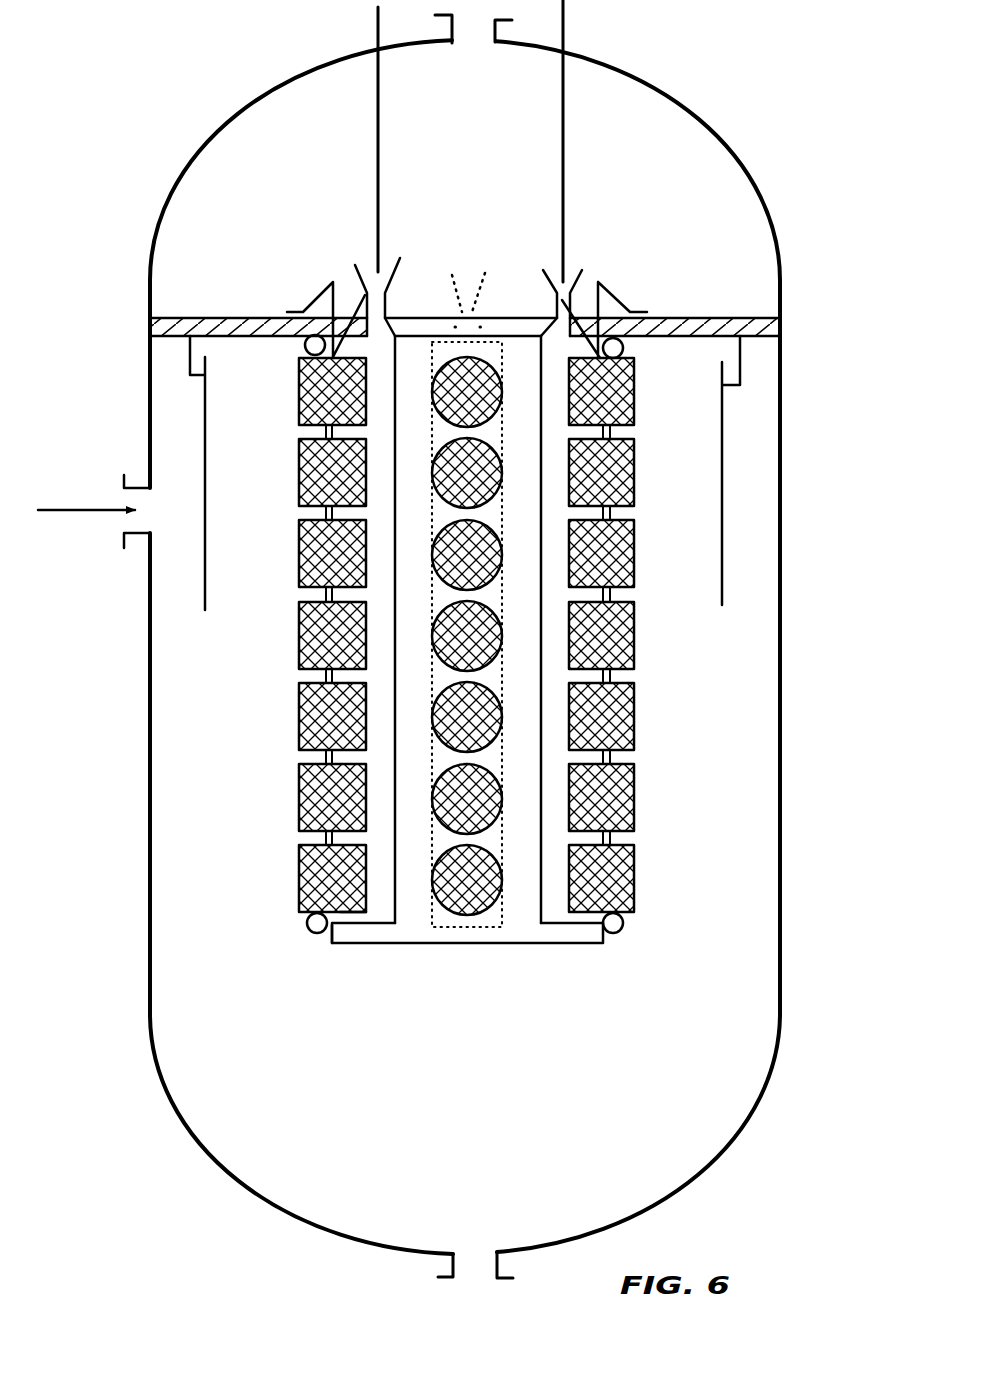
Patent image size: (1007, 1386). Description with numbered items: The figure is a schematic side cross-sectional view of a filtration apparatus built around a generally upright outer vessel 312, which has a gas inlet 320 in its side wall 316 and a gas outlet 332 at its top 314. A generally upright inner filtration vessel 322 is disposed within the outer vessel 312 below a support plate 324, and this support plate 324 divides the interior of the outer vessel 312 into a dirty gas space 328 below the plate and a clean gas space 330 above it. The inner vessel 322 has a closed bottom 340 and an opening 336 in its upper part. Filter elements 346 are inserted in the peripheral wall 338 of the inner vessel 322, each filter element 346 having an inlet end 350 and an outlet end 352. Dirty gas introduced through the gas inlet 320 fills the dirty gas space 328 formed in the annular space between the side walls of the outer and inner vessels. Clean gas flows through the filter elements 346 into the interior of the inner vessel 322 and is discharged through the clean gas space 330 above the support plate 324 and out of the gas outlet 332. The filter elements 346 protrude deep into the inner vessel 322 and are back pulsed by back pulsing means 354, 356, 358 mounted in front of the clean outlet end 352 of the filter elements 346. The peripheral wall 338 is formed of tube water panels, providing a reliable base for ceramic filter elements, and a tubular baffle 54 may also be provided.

The outer vessel 312 is at (842, 360).
The top 314 is at (635, 92).
The side wall 316 is at (148, 760).
The gas inlet 320 is at (150, 510).
The inner filtration vessel 322 is at (326, 958).
The support plate 324 is at (216, 316).
The dirty gas space 328 is at (486, 1147).
The clean gas space 330 is at (499, 178).
The gas outlet 332 is at (470, 32).
The opening 336 is at (428, 302).
The peripheral wall 338 is at (612, 677).
The closed bottom 340 is at (520, 962).
The filter elements 346 is at (610, 805).
The inlet end 350 is at (292, 862).
The outlet end 352 is at (368, 898).
The back pulsing means 354 is at (555, 347).
The back pulsing means 356 is at (562, 303).
The back pulsing means 358 is at (566, 162).
The tubular baffle 54 is at (722, 542).